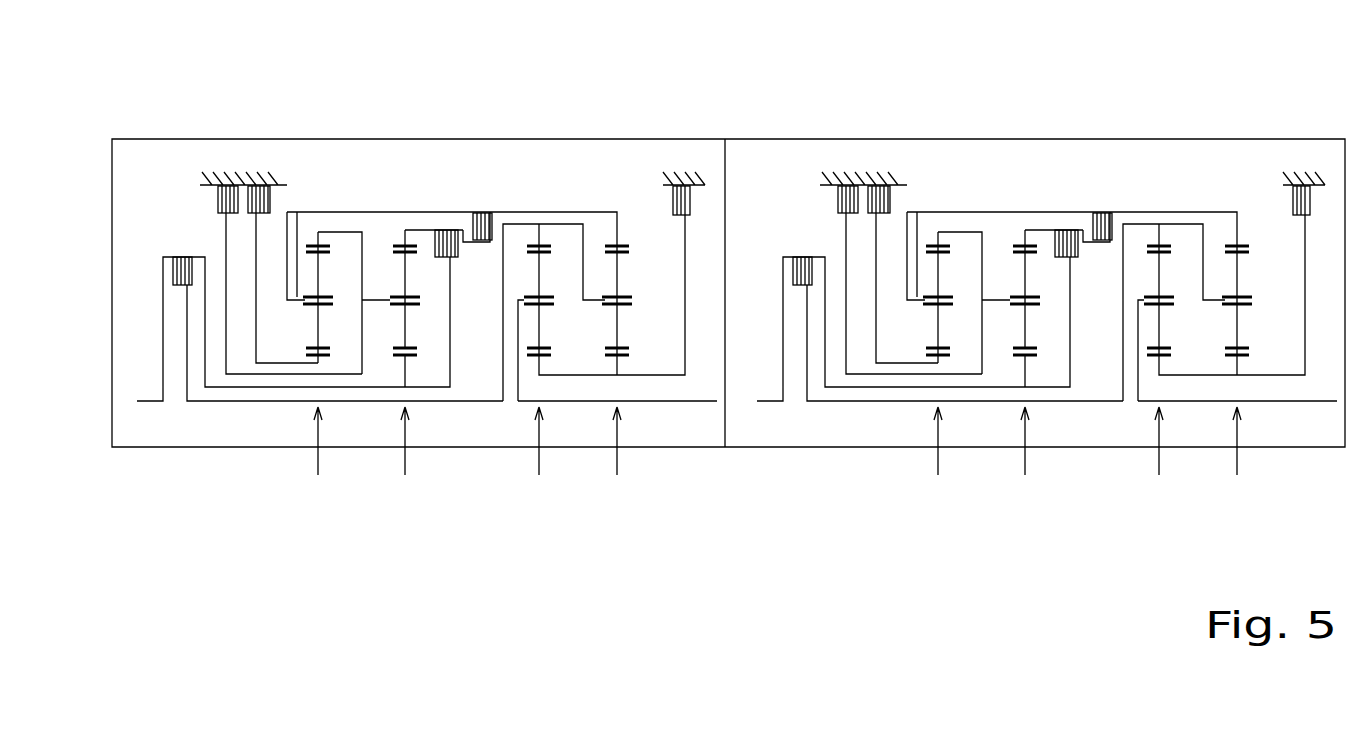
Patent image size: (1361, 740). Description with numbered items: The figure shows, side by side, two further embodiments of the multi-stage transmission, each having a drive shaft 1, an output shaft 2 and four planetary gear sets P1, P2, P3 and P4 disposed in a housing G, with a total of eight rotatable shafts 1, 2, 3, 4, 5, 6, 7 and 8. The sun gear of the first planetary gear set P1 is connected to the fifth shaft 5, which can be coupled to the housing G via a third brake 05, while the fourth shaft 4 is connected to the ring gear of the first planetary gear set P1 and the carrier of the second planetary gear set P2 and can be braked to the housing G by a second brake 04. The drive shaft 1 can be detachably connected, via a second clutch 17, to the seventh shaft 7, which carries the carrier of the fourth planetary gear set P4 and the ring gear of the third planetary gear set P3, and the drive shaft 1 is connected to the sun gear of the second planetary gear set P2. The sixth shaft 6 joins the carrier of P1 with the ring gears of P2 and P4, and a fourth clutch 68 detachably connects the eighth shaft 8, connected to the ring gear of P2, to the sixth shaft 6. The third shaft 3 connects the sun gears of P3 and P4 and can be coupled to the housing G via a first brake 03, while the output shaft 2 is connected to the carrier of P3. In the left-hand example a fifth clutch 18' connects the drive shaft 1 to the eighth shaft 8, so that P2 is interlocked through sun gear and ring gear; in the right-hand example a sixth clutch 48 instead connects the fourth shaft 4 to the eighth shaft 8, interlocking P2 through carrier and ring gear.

The drive shaft 1 is at (608, 410).
The output shaft 2 is at (918, 430).
The third shaft 3 is at (925, 389).
The fourth shaft 4 is at (673, 308).
The fifth shaft 5 is at (604, 456).
The sixth shaft 6 is at (768, 178).
The seventh shaft 7 is at (865, 308).
The eighth shaft 8 is at (738, 200).
The second clutch 17 is at (617, 227).
The fifth clutch 18' is at (451, 155).
The sixth clutch 48 is at (1058, 230).
The fourth clutch 68 is at (799, 147).
The first brake 03 is at (971, 134).
The second brake 04 is at (567, 213).
The third brake 05 is at (593, 208).
The housing G is at (763, 119).
The first planetary gear set P1 is at (626, 462).
The second planetary gear set P2 is at (715, 462).
The third planetary gear set P3 is at (852, 462).
The fourth planetary gear set P4 is at (929, 462).